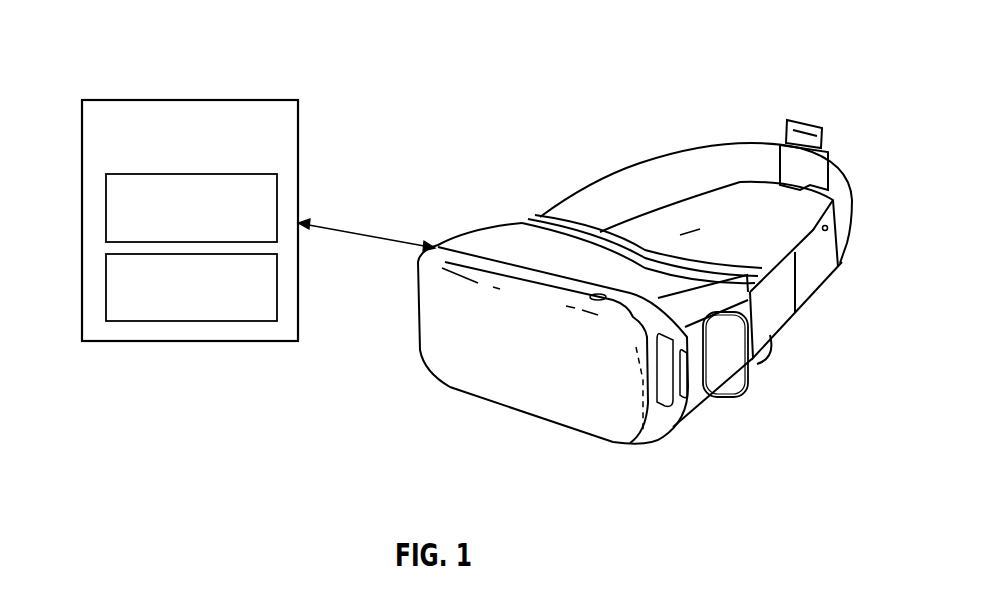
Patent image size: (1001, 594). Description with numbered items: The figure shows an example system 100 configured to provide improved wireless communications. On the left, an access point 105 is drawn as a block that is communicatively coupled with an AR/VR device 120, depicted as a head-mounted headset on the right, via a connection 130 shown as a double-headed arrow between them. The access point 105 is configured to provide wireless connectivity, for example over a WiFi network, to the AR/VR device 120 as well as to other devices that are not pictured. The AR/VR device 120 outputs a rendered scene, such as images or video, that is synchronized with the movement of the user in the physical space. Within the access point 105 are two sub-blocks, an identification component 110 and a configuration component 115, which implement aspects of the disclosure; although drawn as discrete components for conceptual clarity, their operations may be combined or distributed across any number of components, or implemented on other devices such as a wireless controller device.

The system 100 is at (113, 60).
The access point 105 is at (298, 117).
The identification component 110 is at (277, 207).
The configuration component 115 is at (277, 287).
The AR/VR device 120 is at (680, 426).
The connection 130 is at (375, 232).